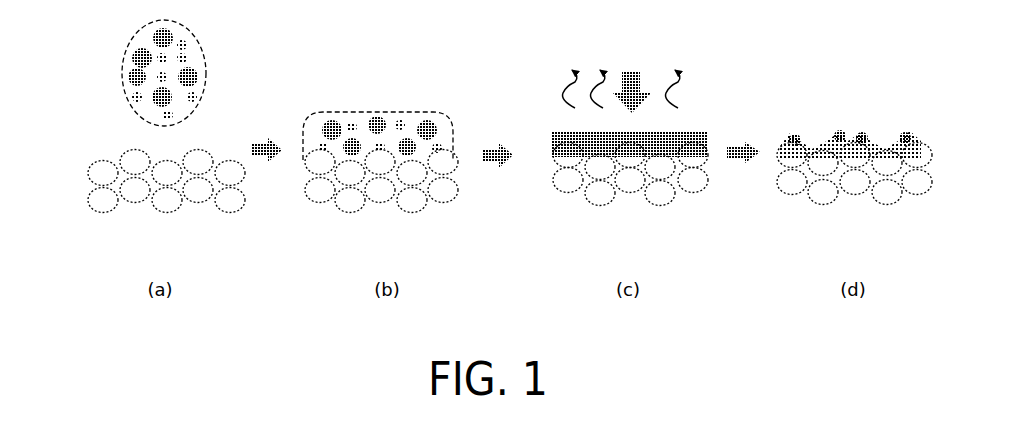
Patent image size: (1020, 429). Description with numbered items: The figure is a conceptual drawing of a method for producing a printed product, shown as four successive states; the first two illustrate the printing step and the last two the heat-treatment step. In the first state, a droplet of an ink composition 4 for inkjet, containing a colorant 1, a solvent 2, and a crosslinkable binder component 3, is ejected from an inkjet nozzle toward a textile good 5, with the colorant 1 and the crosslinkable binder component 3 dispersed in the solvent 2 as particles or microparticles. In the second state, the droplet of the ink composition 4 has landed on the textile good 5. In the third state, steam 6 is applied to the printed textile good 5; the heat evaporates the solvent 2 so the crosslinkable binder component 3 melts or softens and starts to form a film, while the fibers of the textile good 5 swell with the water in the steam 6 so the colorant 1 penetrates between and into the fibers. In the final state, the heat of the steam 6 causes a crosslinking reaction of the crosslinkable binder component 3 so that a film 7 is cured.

The colorant 1 is at (146, 40).
The solvent 2 is at (131, 60).
The crosslinkable binder component 3 is at (137, 77).
The ink composition for inkjet 4 is at (208, 53).
The textile good 5 is at (76, 177).
The steam 6 is at (632, 77).
The film 7 is at (792, 132).